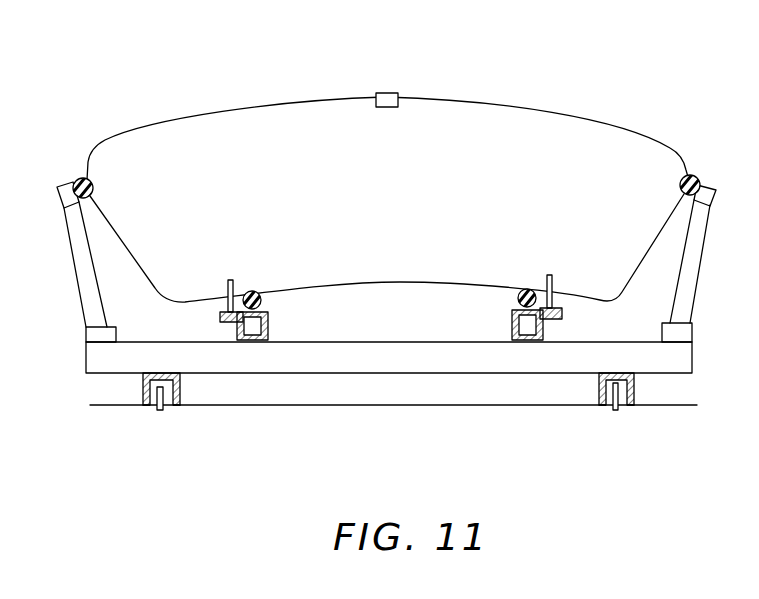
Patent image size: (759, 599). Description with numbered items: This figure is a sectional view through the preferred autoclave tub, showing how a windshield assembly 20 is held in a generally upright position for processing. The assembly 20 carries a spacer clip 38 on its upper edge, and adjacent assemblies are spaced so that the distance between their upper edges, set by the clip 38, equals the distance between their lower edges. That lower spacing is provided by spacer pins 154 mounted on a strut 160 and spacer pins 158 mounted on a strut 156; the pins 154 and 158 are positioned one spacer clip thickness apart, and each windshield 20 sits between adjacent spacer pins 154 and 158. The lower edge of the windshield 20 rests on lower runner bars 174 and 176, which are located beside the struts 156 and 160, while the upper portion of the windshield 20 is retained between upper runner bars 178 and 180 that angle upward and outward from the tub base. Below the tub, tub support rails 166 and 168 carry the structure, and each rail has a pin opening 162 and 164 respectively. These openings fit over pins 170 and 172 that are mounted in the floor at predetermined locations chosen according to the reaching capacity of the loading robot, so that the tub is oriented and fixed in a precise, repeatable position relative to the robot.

The assembly 20 is at (527, 103).
The spacer clip 38 is at (385, 93).
The spacer pin 154 is at (553, 277).
The strut 156 is at (222, 318).
The spacer pin 158 is at (228, 302).
The strut 160 is at (560, 312).
The pin opening 162 is at (150, 402).
The pin opening 164 is at (605, 400).
The tub support rail 166 is at (143, 380).
The tub support rail 168 is at (633, 383).
The pin 170 is at (163, 410).
The pin 172 is at (617, 412).
The lower runner bar 174 is at (262, 299).
The lower runner bar 176 is at (518, 298).
The upper runner bar 178 is at (70, 177).
The upper runner bar 180 is at (688, 174).